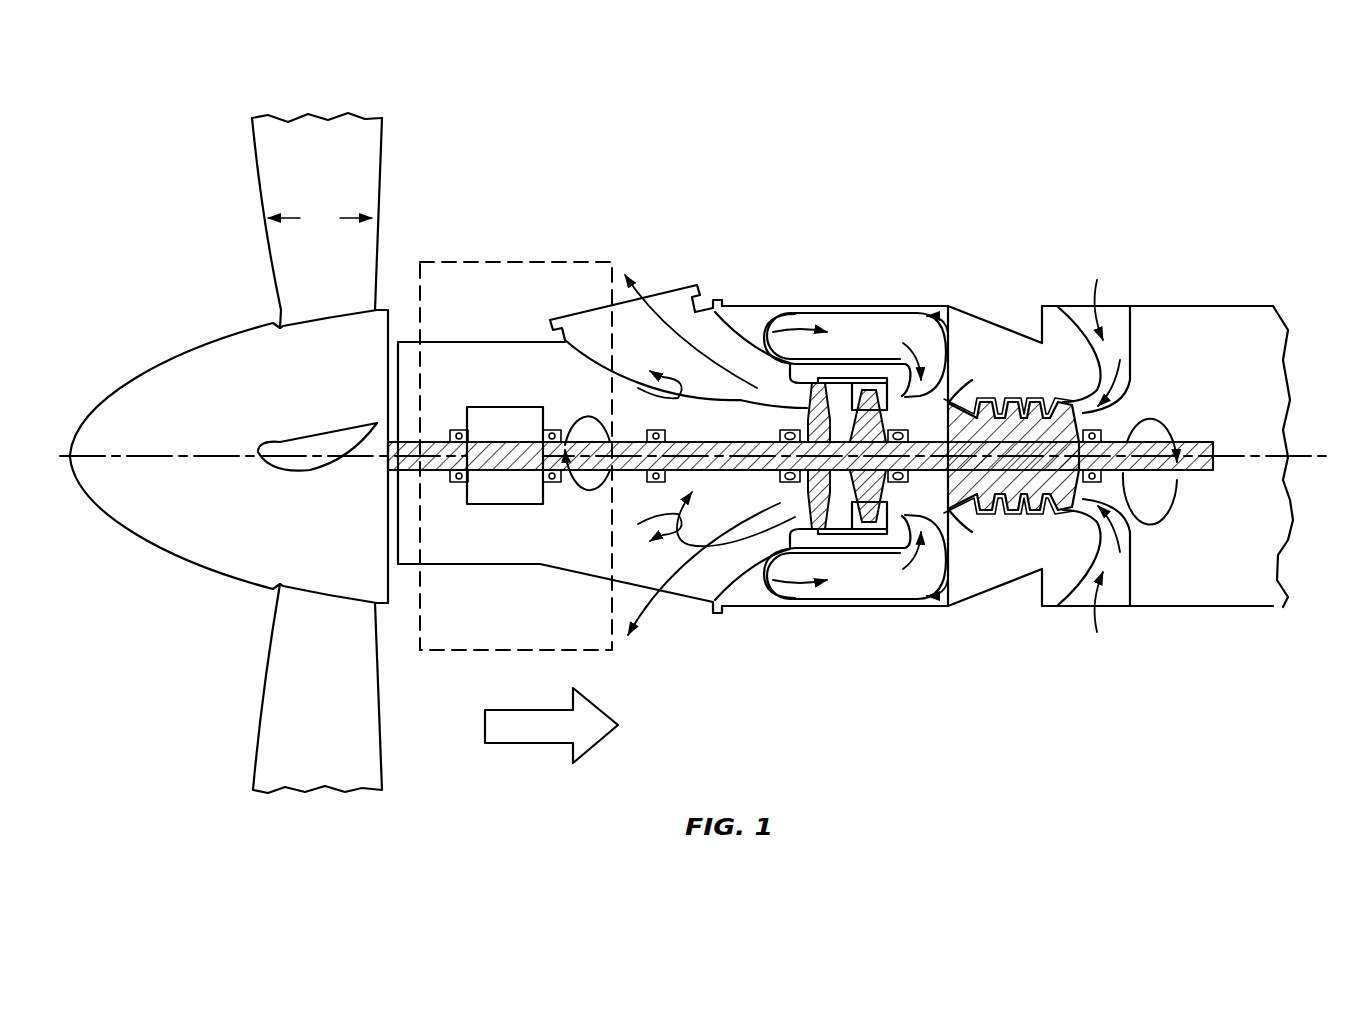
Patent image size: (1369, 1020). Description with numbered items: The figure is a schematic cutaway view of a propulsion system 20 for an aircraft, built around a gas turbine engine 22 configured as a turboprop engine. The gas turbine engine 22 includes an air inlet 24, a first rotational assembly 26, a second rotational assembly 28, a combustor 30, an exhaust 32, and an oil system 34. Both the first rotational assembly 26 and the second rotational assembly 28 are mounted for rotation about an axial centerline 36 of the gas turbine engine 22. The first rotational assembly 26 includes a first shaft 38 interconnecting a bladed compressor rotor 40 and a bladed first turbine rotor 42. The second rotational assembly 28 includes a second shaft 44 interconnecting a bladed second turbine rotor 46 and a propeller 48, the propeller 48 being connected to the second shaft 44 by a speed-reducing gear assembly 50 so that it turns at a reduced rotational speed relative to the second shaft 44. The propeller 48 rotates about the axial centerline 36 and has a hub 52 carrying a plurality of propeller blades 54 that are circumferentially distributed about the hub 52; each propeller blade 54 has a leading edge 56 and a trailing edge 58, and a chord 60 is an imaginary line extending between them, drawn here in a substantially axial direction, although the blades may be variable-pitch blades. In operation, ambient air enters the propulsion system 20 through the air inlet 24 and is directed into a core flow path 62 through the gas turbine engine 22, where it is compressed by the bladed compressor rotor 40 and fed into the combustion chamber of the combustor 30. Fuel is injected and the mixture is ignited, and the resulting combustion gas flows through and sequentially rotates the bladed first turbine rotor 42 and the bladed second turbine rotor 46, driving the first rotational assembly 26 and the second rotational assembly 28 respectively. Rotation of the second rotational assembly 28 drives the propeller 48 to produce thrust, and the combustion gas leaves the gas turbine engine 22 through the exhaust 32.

The propulsion system 20 is at (1205, 172).
The gas turbine engine 22 is at (748, 250).
The air inlet 24 is at (1124, 300).
The first rotational assembly 26 is at (1000, 527).
The second rotational assembly 28 is at (680, 533).
The combustor 30 is at (858, 577).
The exhaust 32 is at (658, 277).
The oil system 34 is at (530, 262).
The axial centerline 36 is at (1323, 470).
The first shaft 38 is at (968, 403).
The bladed compressor rotor 40 is at (1018, 437).
The bladed first turbine rotor 42 is at (862, 378).
The second shaft 44 is at (728, 440).
The bladed second turbine rotor 46 is at (795, 375).
The propeller 48 is at (186, 574).
The speed-reducing gear assembly 50 is at (505, 487).
The hub 52 is at (147, 393).
The propeller blades 54 is at (272, 183).
The leading edge 56 is at (262, 240).
The trailing edge 58 is at (381, 208).
The chord 60 is at (320, 218).
The core flow path 62 is at (953, 355).